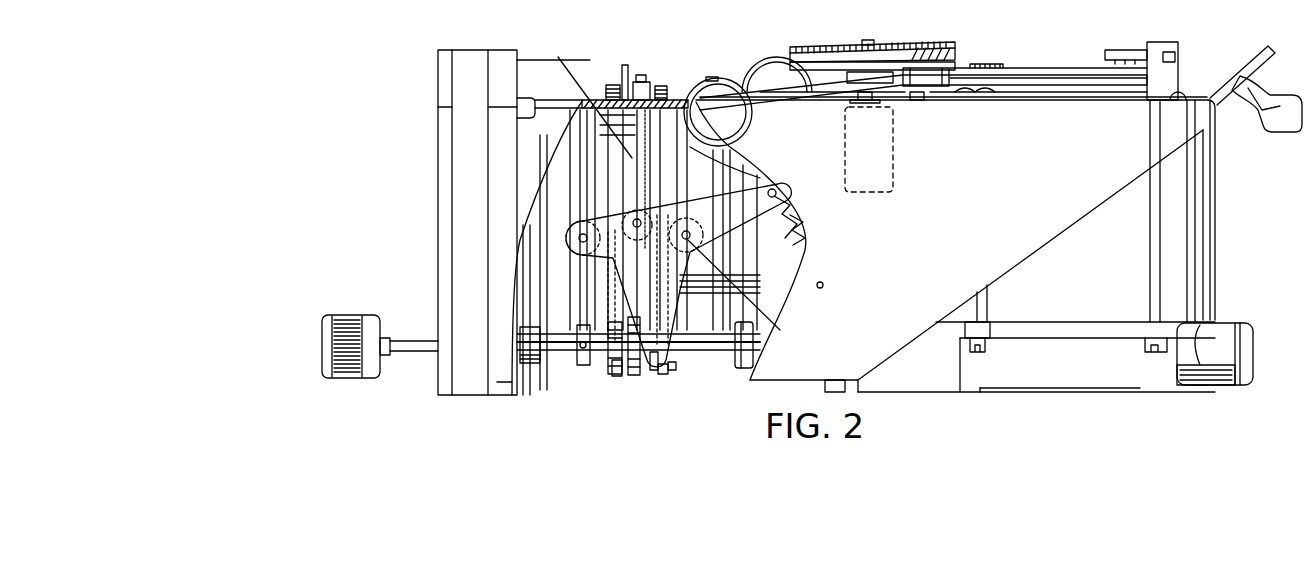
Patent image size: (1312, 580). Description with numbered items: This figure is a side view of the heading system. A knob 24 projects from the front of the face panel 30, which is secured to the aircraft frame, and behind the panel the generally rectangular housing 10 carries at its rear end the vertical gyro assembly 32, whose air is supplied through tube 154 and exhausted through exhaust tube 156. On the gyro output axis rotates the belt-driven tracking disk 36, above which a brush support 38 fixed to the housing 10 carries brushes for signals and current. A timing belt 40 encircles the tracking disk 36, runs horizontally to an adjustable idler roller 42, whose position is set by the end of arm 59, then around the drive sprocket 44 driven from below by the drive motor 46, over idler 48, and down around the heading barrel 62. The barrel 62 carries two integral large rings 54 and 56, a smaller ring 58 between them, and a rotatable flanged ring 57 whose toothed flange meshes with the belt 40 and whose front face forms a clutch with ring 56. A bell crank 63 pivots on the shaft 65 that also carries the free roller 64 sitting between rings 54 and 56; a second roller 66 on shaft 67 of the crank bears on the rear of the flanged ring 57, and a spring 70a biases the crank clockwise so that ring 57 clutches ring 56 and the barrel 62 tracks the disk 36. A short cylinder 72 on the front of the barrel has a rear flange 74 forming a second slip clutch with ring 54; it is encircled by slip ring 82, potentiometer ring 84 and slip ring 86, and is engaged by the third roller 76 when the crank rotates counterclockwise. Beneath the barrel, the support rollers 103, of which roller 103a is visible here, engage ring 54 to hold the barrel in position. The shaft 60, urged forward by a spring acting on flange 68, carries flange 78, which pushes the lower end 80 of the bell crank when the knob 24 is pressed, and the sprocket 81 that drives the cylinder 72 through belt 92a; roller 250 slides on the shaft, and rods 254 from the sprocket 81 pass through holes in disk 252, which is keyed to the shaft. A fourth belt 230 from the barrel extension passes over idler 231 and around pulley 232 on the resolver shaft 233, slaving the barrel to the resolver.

The housing 10 is at (886, 300).
The knob 24 is at (322, 347).
The face panel 30 is at (438, 82).
The vertical gyro assembly 32 is at (1063, 276).
The tracking disk 36 is at (976, 66).
The brush support 38 is at (1118, 50).
The timing belt 40 is at (739, 85).
The idler roller 42 is at (936, 93).
The drive sprocket 44 is at (848, 93).
The drive motor 46 is at (895, 170).
The idler 48 is at (710, 77).
The ring 54 is at (618, 98).
The ring 56 is at (665, 375).
The flanged ring 57 is at (672, 370).
The ring 58 is at (586, 96).
The arm 59 is at (1018, 99).
The shaft 60 is at (416, 340).
The barrel 62 is at (732, 272).
The bell crank 63 is at (778, 194).
The roller 64 is at (678, 275).
The shaft 65 is at (637, 228).
The second roller 66 is at (705, 238).
The shaft 67 is at (780, 335).
The flange 68 is at (742, 369).
The spring 70a is at (806, 226).
The short cylinder 72 is at (541, 220).
The flange 74 is at (611, 84).
The third roller 76 is at (585, 262).
The flange 78 is at (633, 378).
The lower end of bell crank 80 is at (655, 372).
The sprocket 81 is at (545, 362).
The front ring 82 is at (567, 170).
The center ring 84 is at (578, 151).
The rear ring 86 is at (590, 133).
The belt 92a is at (515, 252).
The bolt 103 is at (646, 80).
The roller 103a is at (627, 72).
The tube 154 is at (1255, 368).
The exhaust tube 156 is at (1255, 337).
The fourth belt 230 is at (815, 49).
The idler 231 is at (769, 60).
The pulley 232 is at (912, 43).
The shaft 233 is at (868, 40).
The roller 250 is at (627, 380).
The disk 252 is at (583, 366).
The rod 254 is at (599, 364).